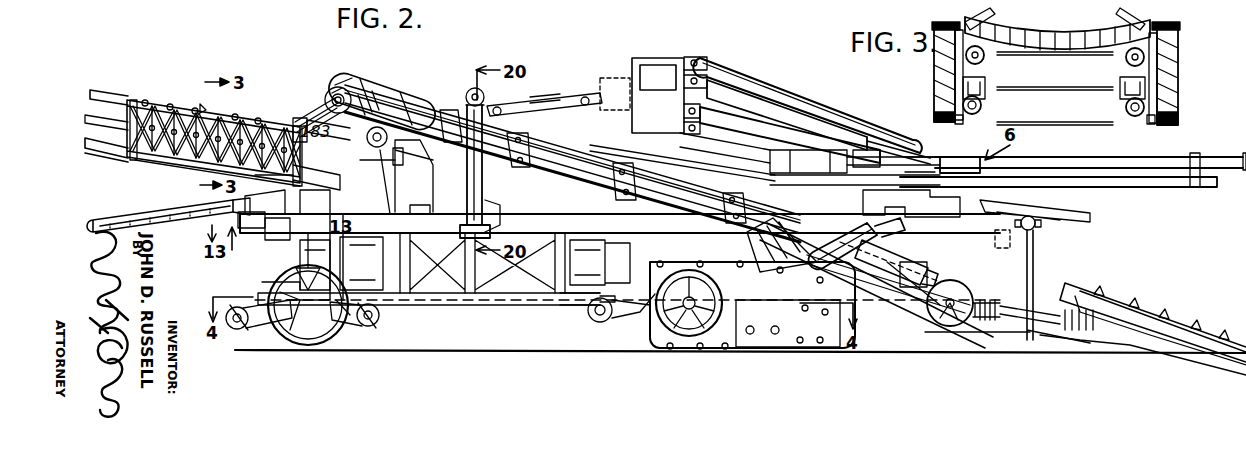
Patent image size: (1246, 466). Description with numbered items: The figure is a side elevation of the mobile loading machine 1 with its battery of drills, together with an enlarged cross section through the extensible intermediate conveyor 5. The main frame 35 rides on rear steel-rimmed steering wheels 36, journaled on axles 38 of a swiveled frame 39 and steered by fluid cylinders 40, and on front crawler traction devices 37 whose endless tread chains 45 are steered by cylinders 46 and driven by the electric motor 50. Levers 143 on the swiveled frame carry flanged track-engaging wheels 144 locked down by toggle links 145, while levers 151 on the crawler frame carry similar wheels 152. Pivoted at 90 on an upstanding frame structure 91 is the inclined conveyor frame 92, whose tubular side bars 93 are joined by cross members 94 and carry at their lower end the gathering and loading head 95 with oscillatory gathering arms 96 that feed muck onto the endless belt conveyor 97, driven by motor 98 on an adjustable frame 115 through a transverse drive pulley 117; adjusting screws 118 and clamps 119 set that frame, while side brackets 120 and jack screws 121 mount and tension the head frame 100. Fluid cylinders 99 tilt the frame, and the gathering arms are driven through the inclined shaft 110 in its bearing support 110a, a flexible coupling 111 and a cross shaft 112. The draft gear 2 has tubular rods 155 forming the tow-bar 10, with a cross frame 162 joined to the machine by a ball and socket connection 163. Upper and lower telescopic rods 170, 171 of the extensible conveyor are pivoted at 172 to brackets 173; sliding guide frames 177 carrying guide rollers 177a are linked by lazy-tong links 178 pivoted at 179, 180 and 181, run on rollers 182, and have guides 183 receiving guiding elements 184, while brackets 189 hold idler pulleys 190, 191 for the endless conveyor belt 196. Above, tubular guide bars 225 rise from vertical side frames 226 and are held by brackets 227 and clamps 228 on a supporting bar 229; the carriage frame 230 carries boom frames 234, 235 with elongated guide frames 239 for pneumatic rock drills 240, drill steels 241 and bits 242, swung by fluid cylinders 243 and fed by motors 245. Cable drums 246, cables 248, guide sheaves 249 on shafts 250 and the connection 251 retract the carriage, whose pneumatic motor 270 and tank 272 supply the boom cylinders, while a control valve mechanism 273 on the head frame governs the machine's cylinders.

In FIG. 2, the mobile loading machine 1 is at (915, 315).
In FIG. 2, the extensible draft gear 2 is at (245, 220).
In FIG. 2, the extensible intermediate conveyor 5 is at (136, 87).
In FIG. 2, the tow-bar 10 is at (198, 218).
In FIG. 2, the main frame 35 is at (622, 214).
In FIG. 2, the rear steering wheels 36 is at (310, 345).
In FIG. 2, the front steering and crawler traction devices 37 is at (665, 334).
In FIG. 2, the axles 38 is at (292, 325).
In FIG. 2, the swiveled steering-wheel frame 39 is at (350, 318).
In FIG. 2, the fluid cylinders 40 is at (438, 306).
In FIG. 2, the endless crawler tread chains 45 is at (760, 349).
In FIG. 2, the fluid cylinders 46 is at (575, 306).
In FIG. 2, the motor 50 is at (360, 255).
In FIG. 2, the pivot 90 is at (380, 126).
In FIG. 2, the upstanding frame structure 91 is at (370, 185).
In FIG. 2, the inclined conveyor frame 92 is at (672, 180).
In FIG. 2, the tubular side bars 93 is at (566, 178).
In FIG. 2, the cross members 94 is at (580, 168).
In FIG. 2, the gathering and loading head 95 is at (1150, 302).
In FIG. 2, the oscillatory gathering arms 96 is at (1180, 315).
In FIG. 2, the endless belt conveyor 97 is at (608, 157).
In FIG. 2, the motor 98 is at (400, 90).
In FIG. 2, the fluid cylinders 99 is at (832, 240).
In FIG. 2, the loading head frame 100 is at (1003, 324).
In FIG. 2, the inclined shaft 110 is at (840, 272).
In FIG. 2, the bearing support 110a is at (805, 262).
In FIG. 2, the flexible coupling 111 is at (905, 292).
In FIG. 2, the cross shaft 112 is at (940, 322).
In FIG. 2, the adjustable frame 115 is at (345, 82).
In FIG. 2, the transverse drive pulley 117 is at (330, 92).
In FIG. 2, the adjusting screws 118 is at (333, 106).
In FIG. 2, the clamps 119 is at (370, 95).
In FIG. 2, the side brackets 120 is at (905, 262).
In FIG. 2, the jack screws 121 is at (935, 268).
In FIG. 2, the levers 143 is at (246, 332).
In FIG. 2, the track-engaging wheels 144 is at (237, 330).
In FIG. 2, the toggle links 145 is at (270, 282).
In FIG. 2, the levers 151 is at (625, 315).
In FIG. 2, the track-engaging wheels 152 is at (597, 318).
In FIG. 2, the tubular rods 155 is at (168, 218).
In FIG. 2, the cross frame 162 is at (250, 220).
In FIG. 2, the ball and socket pivotal connection 163 is at (275, 240).
In FIG. 2, the upper telescopic rods 170 is at (108, 92).
In FIG. 3, the upper telescopic rods 170 is at (983, 58).
In FIG. 2, the lower telescopic rods 171 is at (103, 155).
In FIG. 3, the lower telescopic rods 171 is at (981, 102).
In FIG. 2, the pivotal connection 172 is at (368, 170).
In FIG. 2, the brackets 173 is at (372, 205).
In FIG. 2, the guide frames 177 is at (172, 104).
In FIG. 3, the guide frames 177 is at (993, 10).
In FIG. 2, the transverse guide rollers 177a is at (203, 104).
In FIG. 3, the transverse guide rollers 177a is at (1125, 18).
In FIG. 2, the lazy-tong links 178 is at (150, 160).
In FIG. 3, the lazy-tong links 178 is at (934, 66).
In FIG. 2, the intermediate pivots 179 is at (88, 122).
In FIG. 2, the upper pivots 180 is at (240, 114).
In FIG. 3, the upper pivots 180 is at (934, 26).
In FIG. 2, the lower pivots 181 is at (172, 168).
In FIG. 3, the lower pivots 181 is at (934, 116).
In FIG. 3, the rollers 182 is at (985, 90).
In FIG. 2, the upwardly extending guides 183 is at (132, 160).
In FIG. 3, the upwardly extending guides 183 is at (955, 80).
In FIG. 3, the guiding elements 184 is at (960, 118).
In FIG. 2, the brackets 189 is at (317, 212).
In FIG. 2, the idler pulley 190 is at (305, 126).
In FIG. 2, the idler pulley 191 is at (283, 181).
In FIG. 2, the endless conveyor belt 196 is at (305, 112).
In FIG. 3, the endless conveyor belt 196 is at (1058, 30).
In FIG. 2, the tubular guide bars 225 is at (742, 154).
In FIG. 2, the vertical side frames 226 is at (467, 120).
In FIG. 2, the brackets 227 is at (1075, 220).
In FIG. 2, the clamps 228 is at (1036, 228).
In FIG. 2, the transverse horizontal supporting bar 229 is at (1032, 238).
In FIG. 2, the carriage frame 230 is at (572, 93).
In FIG. 2, the boom frame 234 is at (773, 80).
In FIG. 2, the boom frame 235 is at (792, 113).
In FIG. 2, the elongated guide frames 239 is at (1152, 188).
In FIG. 2, the pneumatic rock drills 240 is at (803, 177).
In FIG. 2, the drill steels 241 is at (1096, 157).
In FIG. 2, the rock drill bits 242 is at (1244, 156).
In FIG. 2, the fluid cylinders 243 is at (735, 84).
In FIG. 2, the pneumatic feeding motors 245 is at (915, 200).
In FIG. 2, the cable drums 246 is at (492, 208).
In FIG. 2, the cables 248 is at (466, 165).
In FIG. 2, the guide sheaves 249 is at (466, 100).
In FIG. 2, the transverse horizontal shafts 250 is at (470, 89).
In FIG. 2, the cable connection 251 is at (538, 97).
In FIG. 2, the pneumatic motor 270 is at (606, 78).
In FIG. 2, the tank 272 is at (650, 58).
In FIG. 2, the control valve mechanism 273 is at (1002, 250).